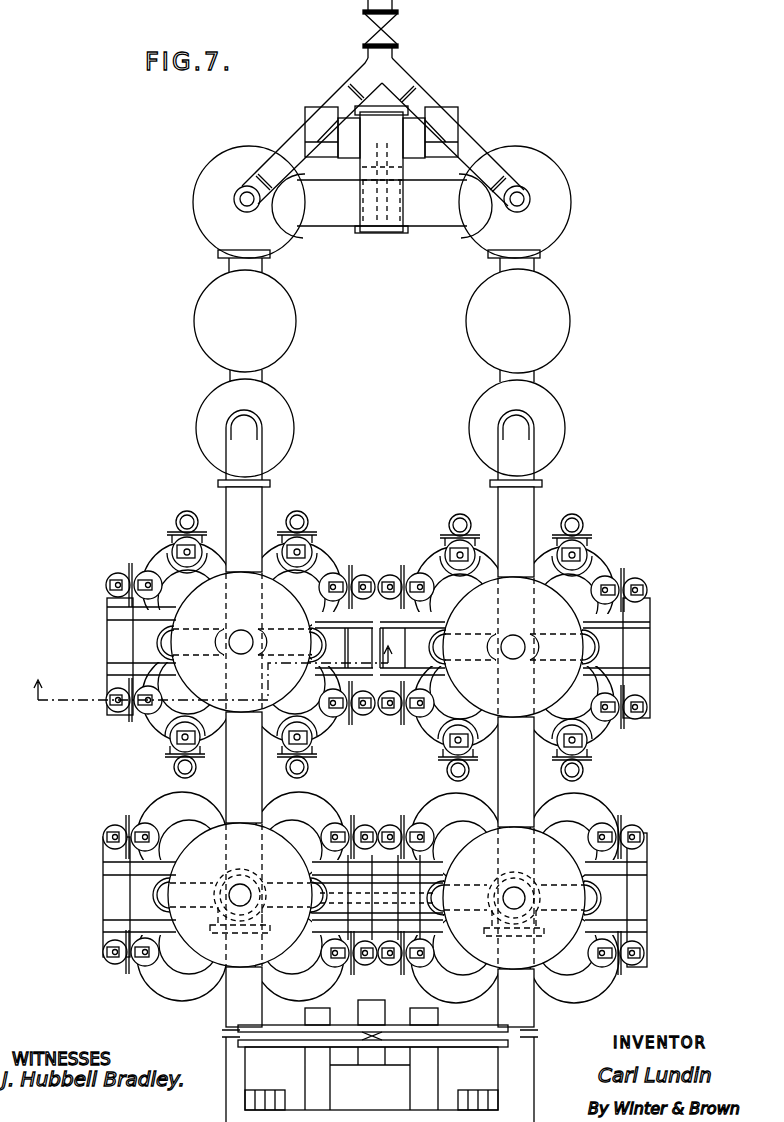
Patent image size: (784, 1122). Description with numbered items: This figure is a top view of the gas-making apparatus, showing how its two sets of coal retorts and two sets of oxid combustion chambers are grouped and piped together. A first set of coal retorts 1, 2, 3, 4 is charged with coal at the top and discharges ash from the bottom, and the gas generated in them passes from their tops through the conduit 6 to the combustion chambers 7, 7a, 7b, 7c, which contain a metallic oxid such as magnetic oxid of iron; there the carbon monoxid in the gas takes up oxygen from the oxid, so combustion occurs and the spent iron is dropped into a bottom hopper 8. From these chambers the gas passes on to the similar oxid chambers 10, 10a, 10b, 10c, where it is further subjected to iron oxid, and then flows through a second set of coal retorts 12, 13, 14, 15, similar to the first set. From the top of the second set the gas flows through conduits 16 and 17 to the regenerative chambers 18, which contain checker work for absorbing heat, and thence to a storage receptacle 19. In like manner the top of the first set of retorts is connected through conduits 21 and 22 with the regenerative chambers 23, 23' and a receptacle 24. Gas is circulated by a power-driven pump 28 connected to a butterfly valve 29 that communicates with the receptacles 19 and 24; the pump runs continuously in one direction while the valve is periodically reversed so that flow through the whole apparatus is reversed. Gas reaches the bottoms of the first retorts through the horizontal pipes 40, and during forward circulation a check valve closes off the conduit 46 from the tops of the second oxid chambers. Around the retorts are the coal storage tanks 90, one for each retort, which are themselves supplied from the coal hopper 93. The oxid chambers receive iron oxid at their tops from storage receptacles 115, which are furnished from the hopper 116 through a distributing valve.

The coal retort 1 is at (323, 560).
The coal retort 2 is at (325, 735).
The coal retort 3 is at (153, 556).
The coal retort 4 is at (152, 737).
The conduit 6 is at (224, 777).
The combustion chamber 7 is at (315, 803).
The combustion chamber 7a is at (283, 988).
The combustion chamber 7b is at (160, 798).
The combustion chamber 7c is at (162, 990).
The bottom hopper 8 is at (213, 662).
The oxid chamber 10 is at (592, 803).
The oxid chamber 10a is at (590, 993).
The oxid chamber 10b is at (437, 803).
The oxid chamber 10c is at (475, 990).
The coal retort 12 is at (600, 558).
The coal retort 13 is at (600, 735).
The coal retort 14 is at (428, 557).
The coal retort 15 is at (423, 733).
The conduit 16 is at (520, 510).
The conduit 17 is at (520, 453).
The regenerative chamber 18 is at (543, 320).
The storage receptacle 19 is at (542, 236).
The conduit 21 is at (245, 512).
The conduit 22 is at (250, 458).
The regenerative chamber 23 is at (266, 428).
The regenerative chamber 23' is at (268, 321).
The receptacle 24 is at (269, 236).
The power-driven pump 28 is at (387, 122).
The butterfly valve 29 is at (370, 200).
The horizontal pipe 40 is at (536, 727).
The conduit 46 is at (497, 787).
The storage tank 90 is at (175, 605).
The hopper 93 is at (372, 642).
The storage receptacle 115 is at (200, 830).
The hopper 116 is at (376, 896).